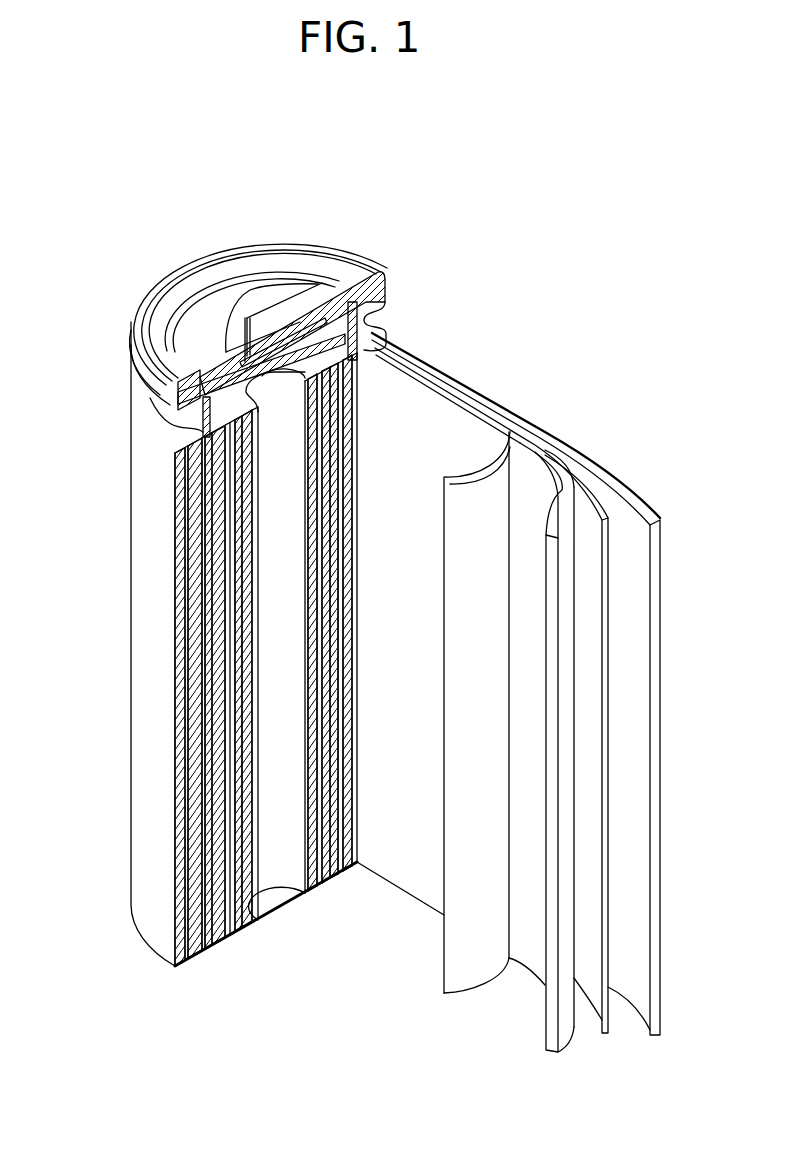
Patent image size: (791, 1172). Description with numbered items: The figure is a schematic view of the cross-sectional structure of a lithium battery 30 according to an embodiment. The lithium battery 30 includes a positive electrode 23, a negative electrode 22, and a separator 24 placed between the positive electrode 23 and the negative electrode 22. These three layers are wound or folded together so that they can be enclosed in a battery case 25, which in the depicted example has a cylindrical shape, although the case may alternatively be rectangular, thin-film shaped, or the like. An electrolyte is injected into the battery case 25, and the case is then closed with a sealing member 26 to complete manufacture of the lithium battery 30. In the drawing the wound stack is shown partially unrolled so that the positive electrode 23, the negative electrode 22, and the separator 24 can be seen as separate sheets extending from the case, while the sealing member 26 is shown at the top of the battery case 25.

The lithium battery 30 is at (380, 189).
The negative electrode 22 is at (656, 530).
The positive electrode 23 is at (566, 487).
The separator 24 is at (604, 497).
The battery case 25 is at (136, 652).
The sealing member 26 is at (255, 285).